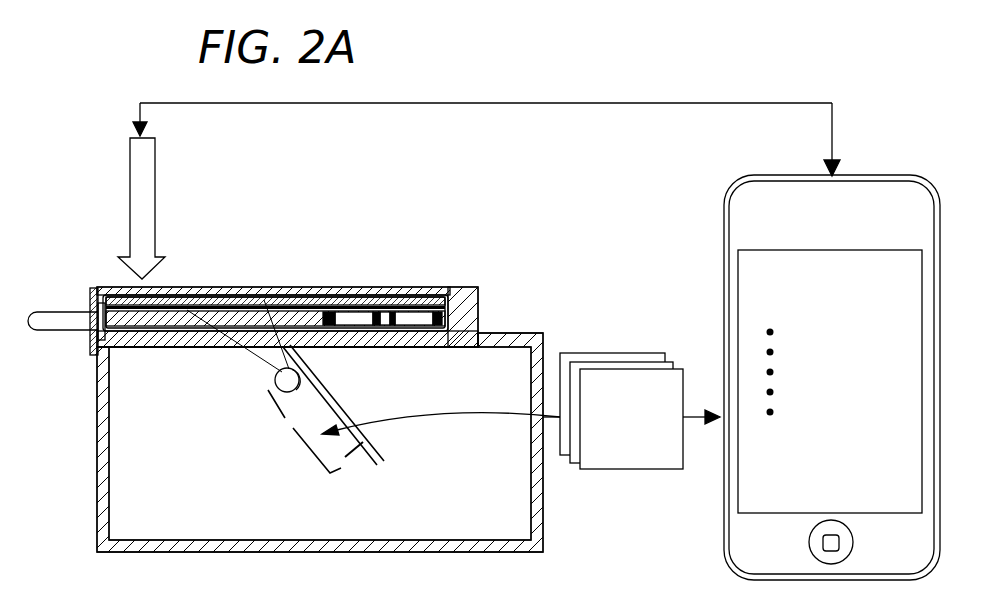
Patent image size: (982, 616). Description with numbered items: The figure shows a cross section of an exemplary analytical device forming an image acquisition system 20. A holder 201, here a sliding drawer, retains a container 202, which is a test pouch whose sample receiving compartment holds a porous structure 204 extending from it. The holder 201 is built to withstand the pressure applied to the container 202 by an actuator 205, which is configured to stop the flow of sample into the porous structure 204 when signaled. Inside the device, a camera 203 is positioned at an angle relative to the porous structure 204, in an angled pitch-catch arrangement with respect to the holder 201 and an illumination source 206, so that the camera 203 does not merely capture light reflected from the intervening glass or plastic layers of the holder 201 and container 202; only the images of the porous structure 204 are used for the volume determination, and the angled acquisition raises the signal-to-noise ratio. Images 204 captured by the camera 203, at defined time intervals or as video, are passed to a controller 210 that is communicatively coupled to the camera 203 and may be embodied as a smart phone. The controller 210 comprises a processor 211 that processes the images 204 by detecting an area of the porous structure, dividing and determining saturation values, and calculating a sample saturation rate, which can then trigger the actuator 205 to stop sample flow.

The image acquisition system 20 is at (783, 73).
The holder 201 is at (88, 298).
The container 202 is at (265, 300).
The camera 203 is at (345, 460).
The porous structure 204 is at (620, 453).
The actuator 205 is at (128, 195).
The illumination source 206 is at (290, 383).
The controller 210 is at (878, 190).
The processor 211 is at (748, 278).